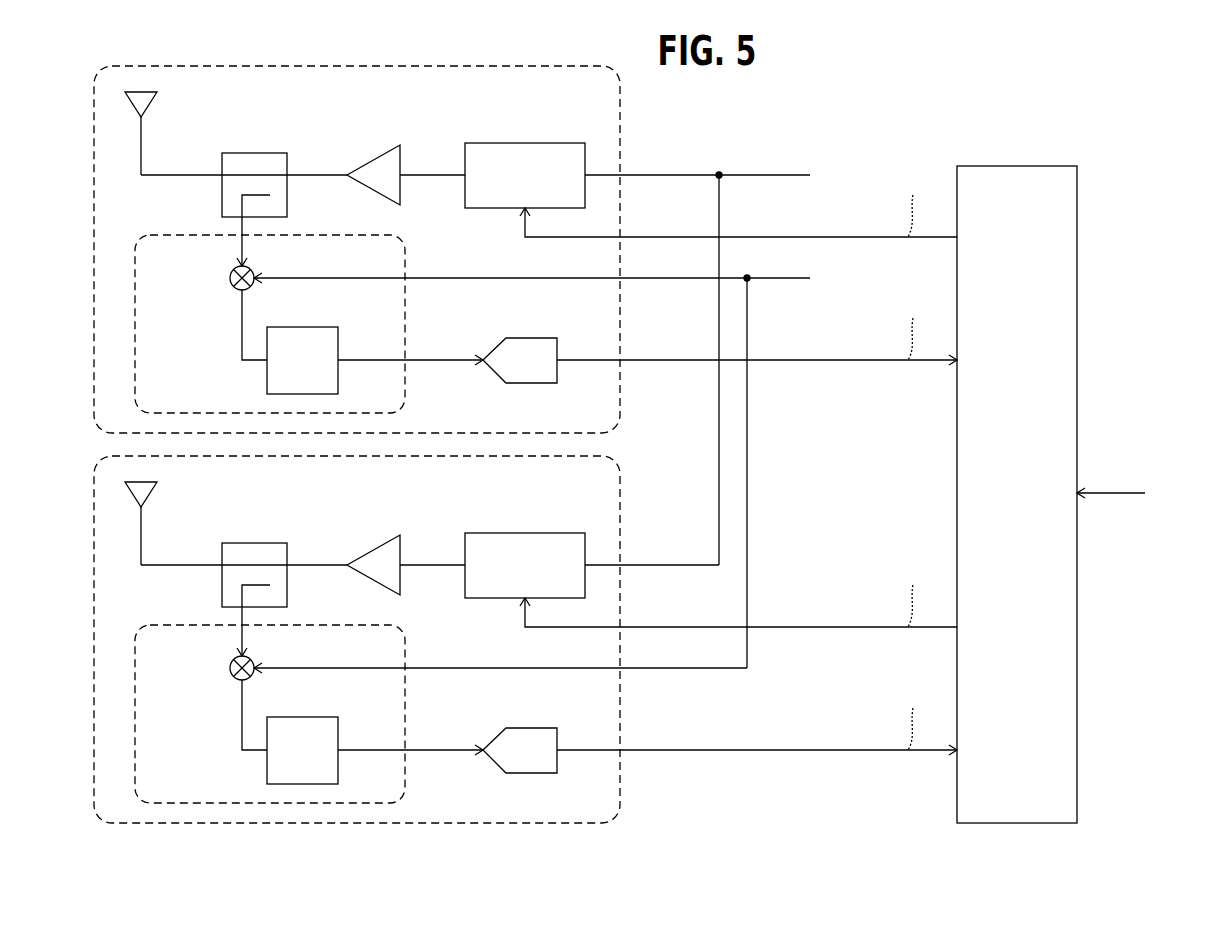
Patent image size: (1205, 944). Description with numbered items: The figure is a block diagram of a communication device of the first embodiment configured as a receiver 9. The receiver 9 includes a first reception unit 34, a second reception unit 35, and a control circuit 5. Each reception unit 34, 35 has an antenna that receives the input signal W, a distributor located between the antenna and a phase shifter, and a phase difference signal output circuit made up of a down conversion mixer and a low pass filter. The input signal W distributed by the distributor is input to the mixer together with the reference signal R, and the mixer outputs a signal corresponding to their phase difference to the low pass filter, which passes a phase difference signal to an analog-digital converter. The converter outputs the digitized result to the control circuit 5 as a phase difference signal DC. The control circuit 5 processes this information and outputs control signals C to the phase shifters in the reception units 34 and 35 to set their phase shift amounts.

The control circuit 5 is at (1038, 166).
The receiver 9 is at (889, 101).
The reception unit 34 is at (622, 112).
The reception unit 35 is at (525, 639).